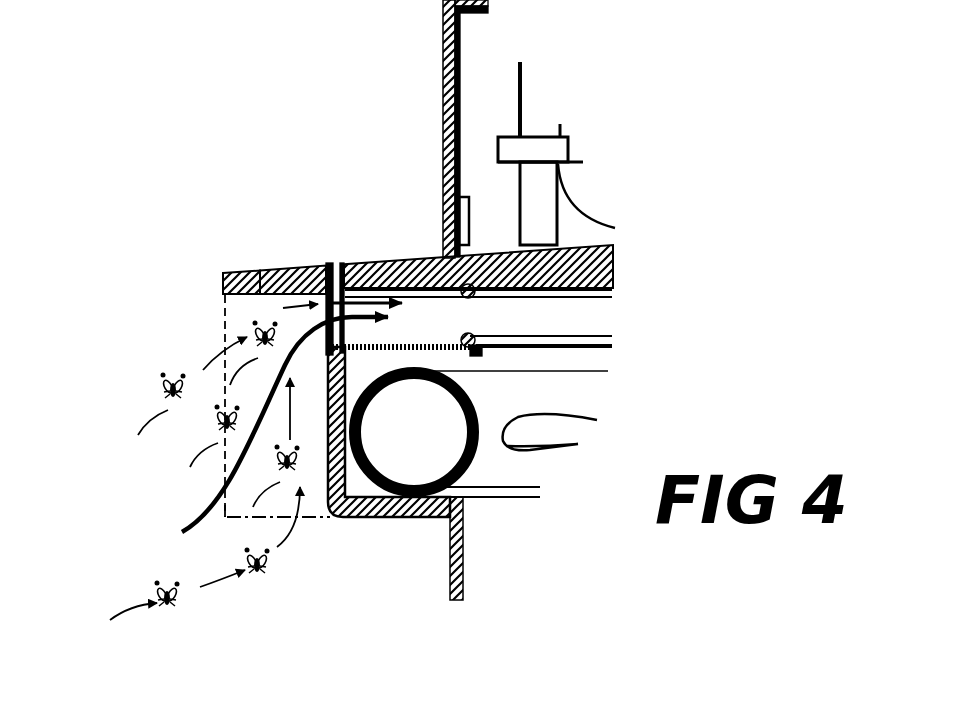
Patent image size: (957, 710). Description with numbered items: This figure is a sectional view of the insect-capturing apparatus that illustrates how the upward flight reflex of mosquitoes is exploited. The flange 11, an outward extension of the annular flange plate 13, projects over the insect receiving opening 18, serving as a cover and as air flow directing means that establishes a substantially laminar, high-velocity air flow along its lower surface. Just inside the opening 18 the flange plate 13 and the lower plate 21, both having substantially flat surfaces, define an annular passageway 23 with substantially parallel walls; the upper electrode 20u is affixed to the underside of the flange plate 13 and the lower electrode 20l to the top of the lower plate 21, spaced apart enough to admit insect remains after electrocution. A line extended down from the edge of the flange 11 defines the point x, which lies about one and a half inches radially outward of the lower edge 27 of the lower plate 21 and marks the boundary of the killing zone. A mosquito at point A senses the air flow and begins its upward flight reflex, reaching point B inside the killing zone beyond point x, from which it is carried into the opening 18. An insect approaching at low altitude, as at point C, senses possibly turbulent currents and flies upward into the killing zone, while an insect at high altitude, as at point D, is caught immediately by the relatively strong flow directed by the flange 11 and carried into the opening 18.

The flange 11 is at (233, 270).
The insect receiving opening 18 is at (286, 268).
The flange plate 13 is at (392, 252).
The upper electrode 20u is at (610, 295).
The passageway 23 is at (587, 317).
The lower electrode 20l is at (605, 345).
The lower plate 21 is at (467, 350).
The lower edge of the lower plate 27 is at (328, 345).
The point A is at (157, 591).
The point B is at (222, 423).
The point C is at (258, 572).
The point D is at (177, 378).
The point X x is at (233, 517).